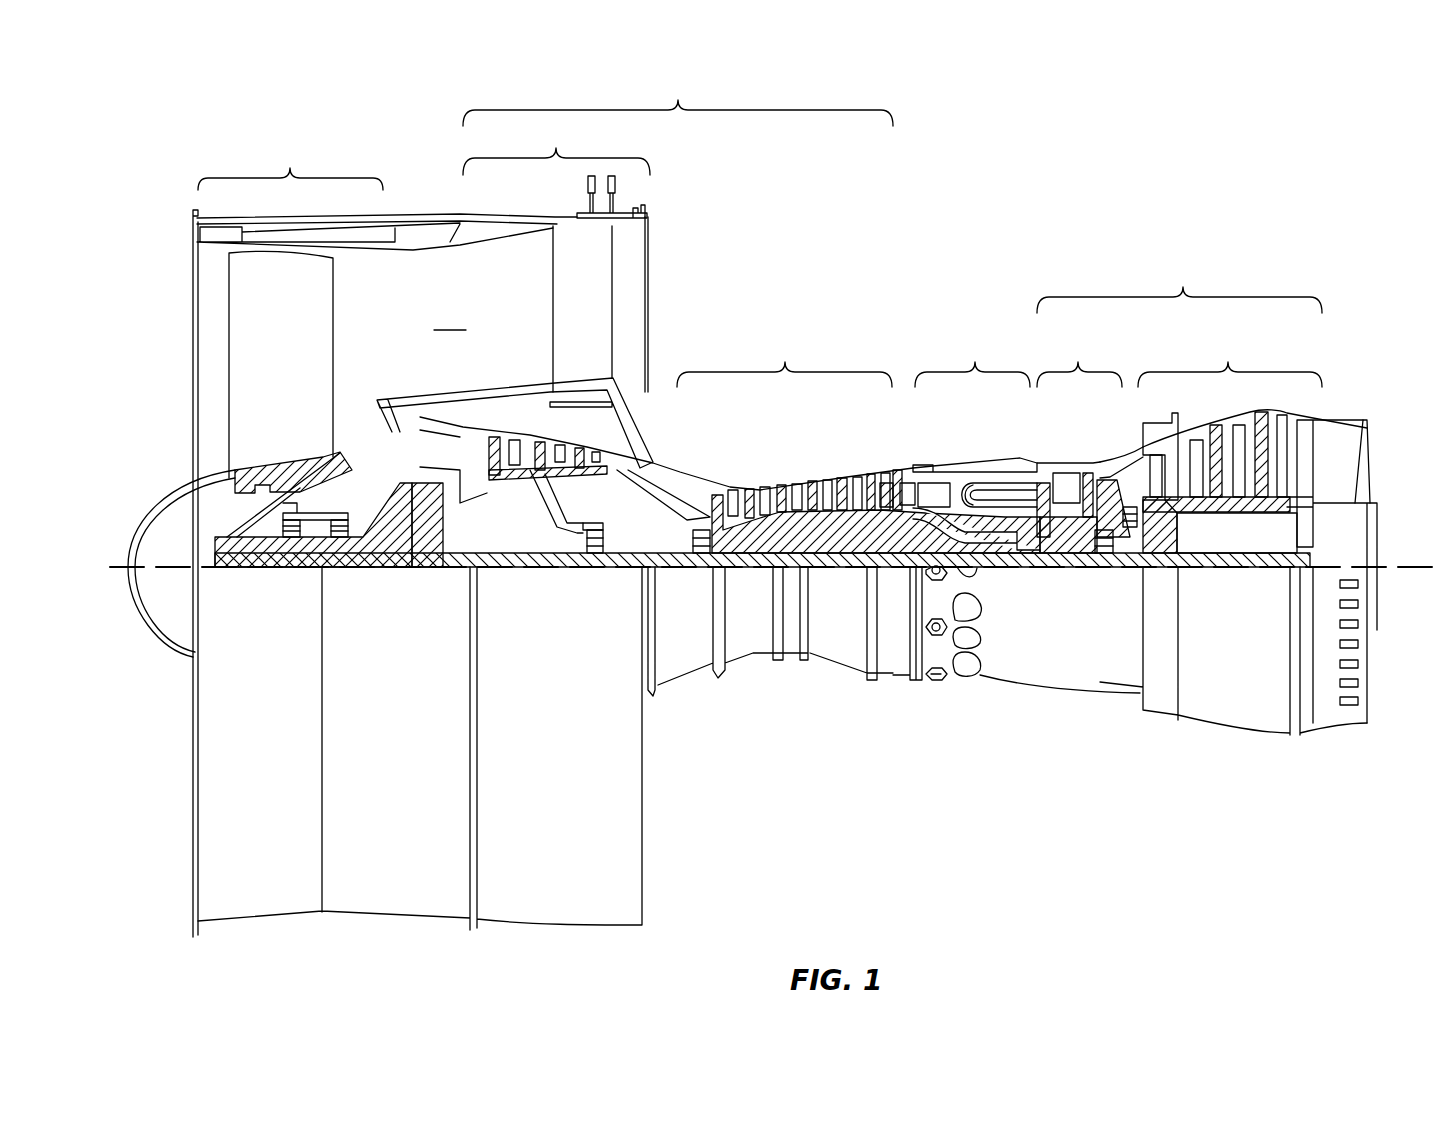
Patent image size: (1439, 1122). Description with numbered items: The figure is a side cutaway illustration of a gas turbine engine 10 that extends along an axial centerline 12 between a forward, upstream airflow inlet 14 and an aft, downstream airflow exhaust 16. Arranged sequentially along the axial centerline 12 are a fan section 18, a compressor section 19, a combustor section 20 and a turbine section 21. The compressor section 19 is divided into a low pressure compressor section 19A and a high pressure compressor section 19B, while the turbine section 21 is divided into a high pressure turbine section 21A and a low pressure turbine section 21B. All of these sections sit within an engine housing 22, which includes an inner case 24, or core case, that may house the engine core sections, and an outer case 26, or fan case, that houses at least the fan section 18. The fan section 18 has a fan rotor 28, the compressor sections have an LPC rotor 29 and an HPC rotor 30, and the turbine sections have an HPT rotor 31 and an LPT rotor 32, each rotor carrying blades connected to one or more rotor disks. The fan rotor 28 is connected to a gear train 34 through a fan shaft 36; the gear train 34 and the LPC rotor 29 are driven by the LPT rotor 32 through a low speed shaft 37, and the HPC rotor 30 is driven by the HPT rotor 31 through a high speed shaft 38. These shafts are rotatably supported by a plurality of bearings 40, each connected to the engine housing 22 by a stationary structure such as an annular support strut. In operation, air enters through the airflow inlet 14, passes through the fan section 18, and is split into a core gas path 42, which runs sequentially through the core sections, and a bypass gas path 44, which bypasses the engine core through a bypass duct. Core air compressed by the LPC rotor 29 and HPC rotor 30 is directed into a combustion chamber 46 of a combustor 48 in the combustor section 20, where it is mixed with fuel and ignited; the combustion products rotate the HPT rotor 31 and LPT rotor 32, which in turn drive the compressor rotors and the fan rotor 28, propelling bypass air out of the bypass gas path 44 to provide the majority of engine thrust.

The gas turbine engine 10 is at (158, 195).
The axial centerline 12 is at (1435, 585).
The airflow inlet 14 is at (193, 297).
The airflow exhaust 16 is at (1367, 458).
The fan section 18 is at (290, 305).
The compressor section 19 is at (678, 95).
The low pressure compressor (LPC) section 19A is at (645, 308).
The high pressure compressor (HPC) section 19B is at (789, 423).
The combustor section 20 is at (990, 433).
The turbine section 21 is at (1179, 280).
The high pressure turbine (HPT) section 21A is at (1107, 433).
The low pressure turbine (LPT) section 21B is at (1257, 526).
The engine housing 22 is at (680, 705).
The inner case 24 is at (893, 675).
The outer case 26 is at (593, 930).
The fan rotor 28 is at (233, 487).
The LPC rotor 29 is at (547, 508).
The HPC rotor 30 is at (832, 523).
The HPT rotor 31 is at (1063, 543).
The LPT rotor 32 is at (1227, 507).
The gear train 34 is at (422, 568).
The fan shaft 36 is at (270, 565).
The low speed shaft 37 is at (1237, 570).
The high speed shaft 38 is at (993, 543).
The bearings 40 is at (338, 535).
The core gas path 42 is at (678, 479).
The bypass gas path 44 is at (541, 304).
The combustion chamber 46 is at (982, 497).
The combustor 48 is at (1005, 480).